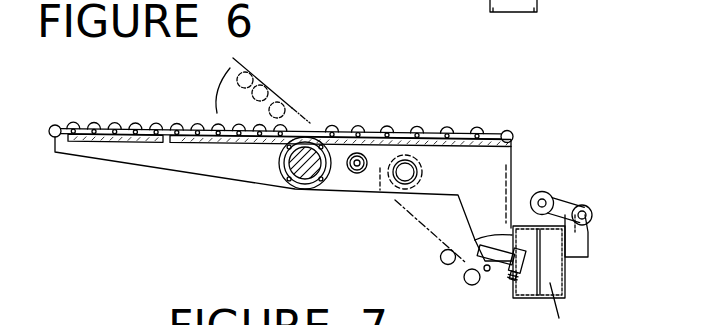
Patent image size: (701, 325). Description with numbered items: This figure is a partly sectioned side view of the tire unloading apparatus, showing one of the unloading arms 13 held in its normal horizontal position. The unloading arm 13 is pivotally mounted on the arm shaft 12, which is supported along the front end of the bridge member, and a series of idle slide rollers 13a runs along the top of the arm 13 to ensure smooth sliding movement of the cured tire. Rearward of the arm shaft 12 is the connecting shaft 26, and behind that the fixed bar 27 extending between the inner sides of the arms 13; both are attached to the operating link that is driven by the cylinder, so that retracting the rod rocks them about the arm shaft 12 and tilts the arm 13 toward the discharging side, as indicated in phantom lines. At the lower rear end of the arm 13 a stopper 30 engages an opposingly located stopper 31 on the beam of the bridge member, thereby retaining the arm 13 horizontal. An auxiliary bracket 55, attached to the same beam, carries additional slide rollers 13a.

The arm shaft 12 is at (313, 175).
The unloading arms 13 is at (177, 153).
The idle slide rollers 13a is at (158, 122).
The connecting shaft 26 is at (358, 154).
The fixed bar 27 is at (406, 160).
The stopper 30 is at (497, 253).
The stopper 31 is at (523, 224).
The auxiliary bracket 55 is at (588, 236).